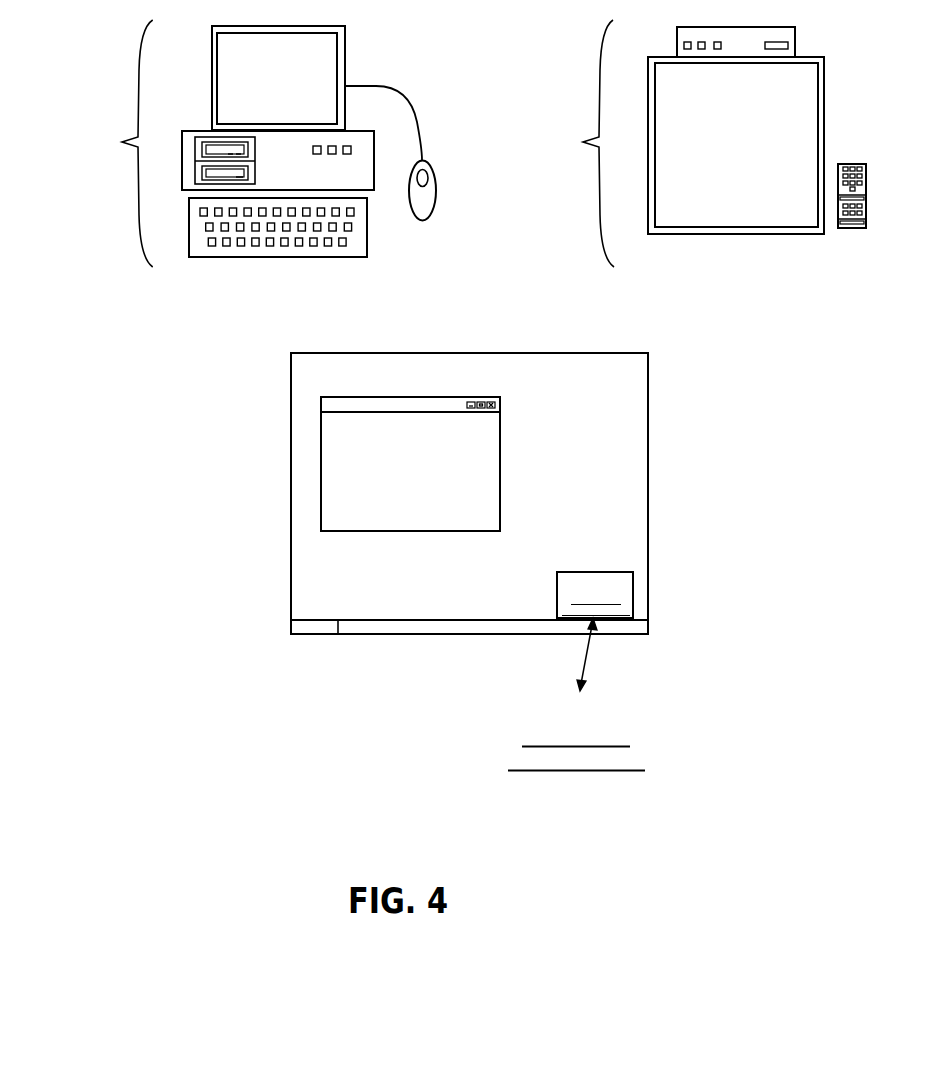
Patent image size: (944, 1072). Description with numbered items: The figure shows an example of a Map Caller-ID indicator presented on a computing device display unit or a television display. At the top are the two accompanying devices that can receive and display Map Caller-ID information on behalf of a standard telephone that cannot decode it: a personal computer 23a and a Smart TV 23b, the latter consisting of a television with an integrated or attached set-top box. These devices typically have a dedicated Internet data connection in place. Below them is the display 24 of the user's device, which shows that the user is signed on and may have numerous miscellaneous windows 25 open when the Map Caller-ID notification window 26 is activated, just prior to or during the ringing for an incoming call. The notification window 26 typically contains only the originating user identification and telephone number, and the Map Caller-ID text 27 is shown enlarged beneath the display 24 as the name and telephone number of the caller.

The personal computer 23a is at (126, 101).
The smart television 23b is at (588, 101).
The display 24 is at (290, 412).
The miscellaneous window 25 is at (502, 442).
The Map Caller-ID notification window 26 is at (548, 588).
The Map Caller-ID text 27 is at (653, 737).